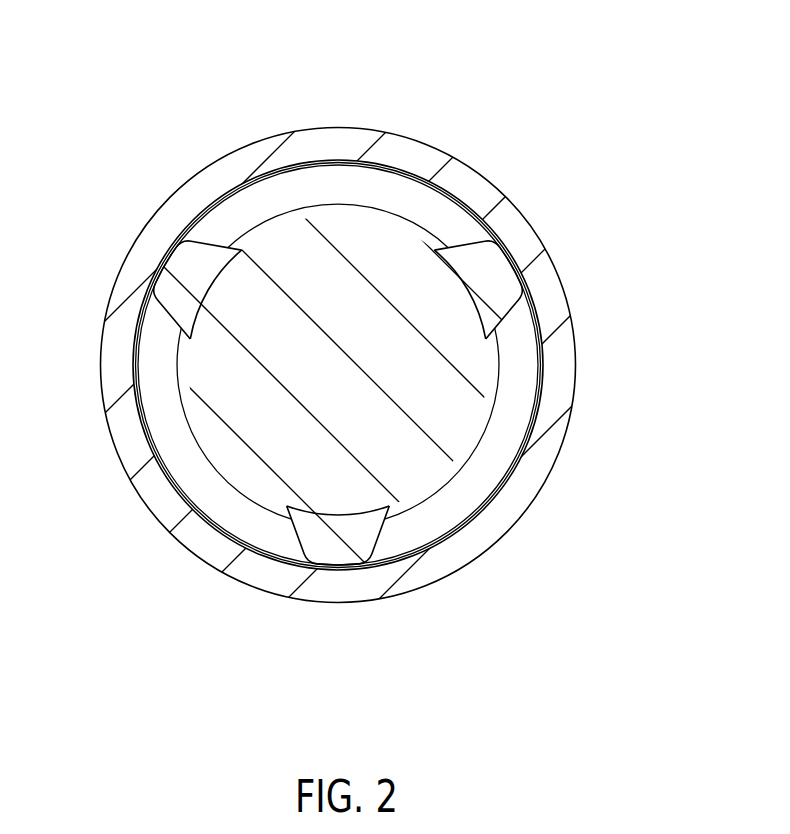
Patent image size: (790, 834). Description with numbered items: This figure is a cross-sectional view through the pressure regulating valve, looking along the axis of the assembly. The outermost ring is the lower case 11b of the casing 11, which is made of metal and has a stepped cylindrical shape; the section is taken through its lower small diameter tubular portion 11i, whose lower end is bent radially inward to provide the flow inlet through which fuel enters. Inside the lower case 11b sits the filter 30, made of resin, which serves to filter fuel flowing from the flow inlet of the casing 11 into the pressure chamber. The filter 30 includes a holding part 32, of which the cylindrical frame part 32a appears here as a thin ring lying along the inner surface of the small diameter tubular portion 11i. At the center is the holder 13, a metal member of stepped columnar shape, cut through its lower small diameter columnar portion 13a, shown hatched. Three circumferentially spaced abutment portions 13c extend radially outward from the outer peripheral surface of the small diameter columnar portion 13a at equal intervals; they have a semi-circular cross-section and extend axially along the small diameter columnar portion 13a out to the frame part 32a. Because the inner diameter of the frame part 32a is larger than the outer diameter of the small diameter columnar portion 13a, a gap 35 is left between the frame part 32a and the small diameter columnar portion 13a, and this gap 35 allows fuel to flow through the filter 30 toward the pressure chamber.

The casing 11 is at (441, 322).
The lower case 11b is at (441, 322).
The lower small diameter tubular portion 11i is at (330, 147).
The holder 13 is at (405, 417).
The lower small diameter columnar portion 13a is at (447, 412).
The abutment portions 13c is at (493, 277).
The filter 30 is at (427, 365).
The holding part 32 is at (427, 365).
The frame part 32a is at (518, 382).
The gap 35 is at (187, 413).